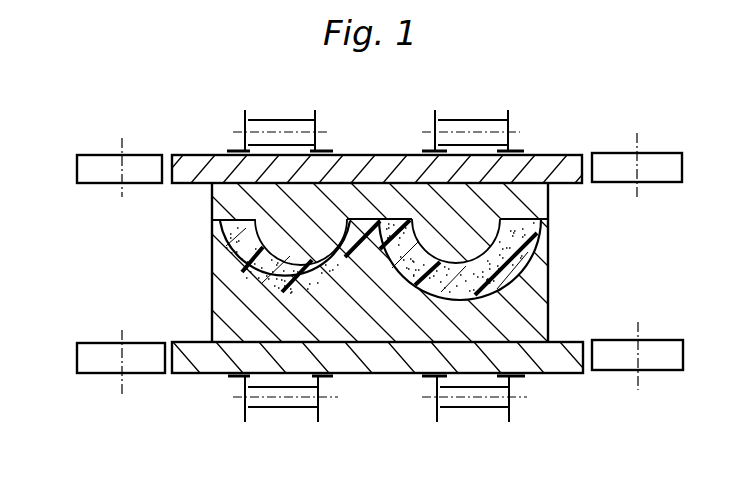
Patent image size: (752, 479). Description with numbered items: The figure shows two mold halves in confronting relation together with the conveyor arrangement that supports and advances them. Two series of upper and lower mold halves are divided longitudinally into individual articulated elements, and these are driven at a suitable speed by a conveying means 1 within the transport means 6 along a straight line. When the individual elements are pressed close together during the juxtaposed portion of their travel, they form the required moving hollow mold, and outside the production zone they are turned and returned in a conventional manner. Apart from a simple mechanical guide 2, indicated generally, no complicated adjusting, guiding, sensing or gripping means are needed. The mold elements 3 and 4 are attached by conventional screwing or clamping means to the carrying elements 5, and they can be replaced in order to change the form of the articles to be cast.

The conveying means 1 is at (245, 125).
The mechanical guide 2 is at (77, 172).
The mold element 3 is at (216, 284).
The mold element 4 is at (212, 210).
The carrying element 5 is at (556, 166).
The transport means 6 is at (245, 401).